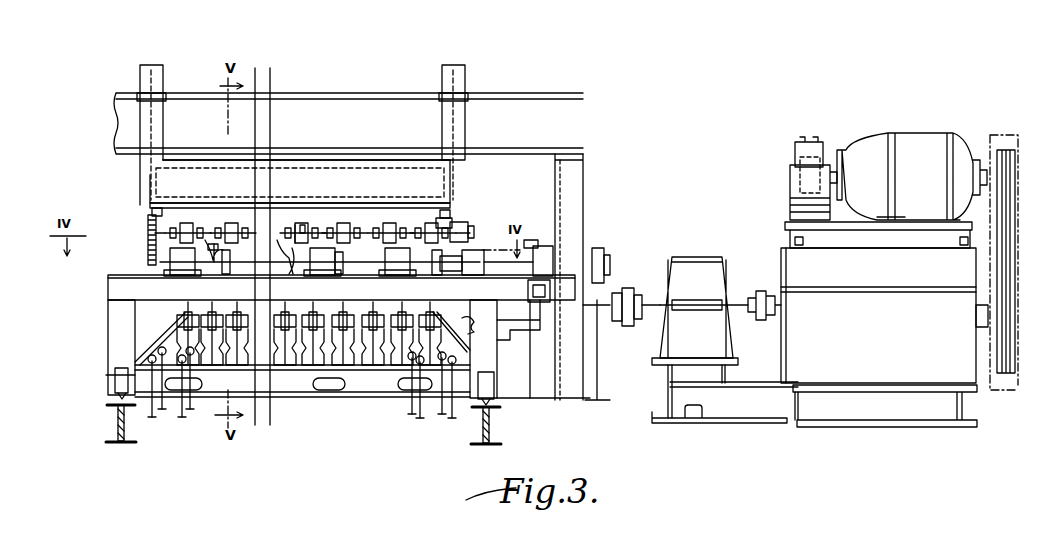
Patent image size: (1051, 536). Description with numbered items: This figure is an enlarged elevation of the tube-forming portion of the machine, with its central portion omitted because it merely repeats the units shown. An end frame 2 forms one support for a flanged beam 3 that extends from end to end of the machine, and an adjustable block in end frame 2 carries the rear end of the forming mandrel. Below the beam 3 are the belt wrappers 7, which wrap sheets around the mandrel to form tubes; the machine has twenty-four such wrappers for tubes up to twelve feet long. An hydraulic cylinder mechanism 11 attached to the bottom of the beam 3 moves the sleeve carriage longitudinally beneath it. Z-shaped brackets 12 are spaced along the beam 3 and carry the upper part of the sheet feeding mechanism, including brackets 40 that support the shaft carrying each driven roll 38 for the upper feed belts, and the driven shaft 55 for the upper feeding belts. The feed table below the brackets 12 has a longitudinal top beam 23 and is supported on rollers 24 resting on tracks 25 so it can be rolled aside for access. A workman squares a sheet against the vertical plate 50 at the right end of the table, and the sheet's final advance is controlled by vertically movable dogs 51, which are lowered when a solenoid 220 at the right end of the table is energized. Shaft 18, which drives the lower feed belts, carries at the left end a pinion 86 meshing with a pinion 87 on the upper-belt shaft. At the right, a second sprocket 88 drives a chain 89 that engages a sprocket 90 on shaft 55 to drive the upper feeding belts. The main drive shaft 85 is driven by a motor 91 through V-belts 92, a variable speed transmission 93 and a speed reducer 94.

The end frame 2 is at (576, 186).
The flanged beam 3 is at (552, 100).
The belt wrappers 7 is at (305, 362).
The hydraulic cylinder mechanism 11 is at (120, 333).
The brackets 12 is at (159, 64).
The shaft 18 is at (212, 262).
The top beam 23 is at (118, 291).
The rollers 24 is at (112, 393).
The tracks 25 is at (118, 407).
The driven roll 38 is at (214, 238).
The brackets 40 is at (150, 219).
The vertical plate 50 is at (454, 250).
The dogs 51 is at (283, 236).
The driven shaft 55 is at (452, 220).
The main drive shaft 85 is at (612, 290).
The pinion 86 is at (160, 262).
The pinion 87 is at (147, 223).
The second sprocket 88 is at (468, 322).
The chain 89 is at (462, 295).
The sprocket 90 is at (468, 230).
The motor 91 is at (916, 140).
The V-belts 92 is at (1003, 245).
The variable speed transmission 93 is at (798, 349).
The speed reducer 94 is at (700, 270).
The solenoid 220 is at (544, 256).